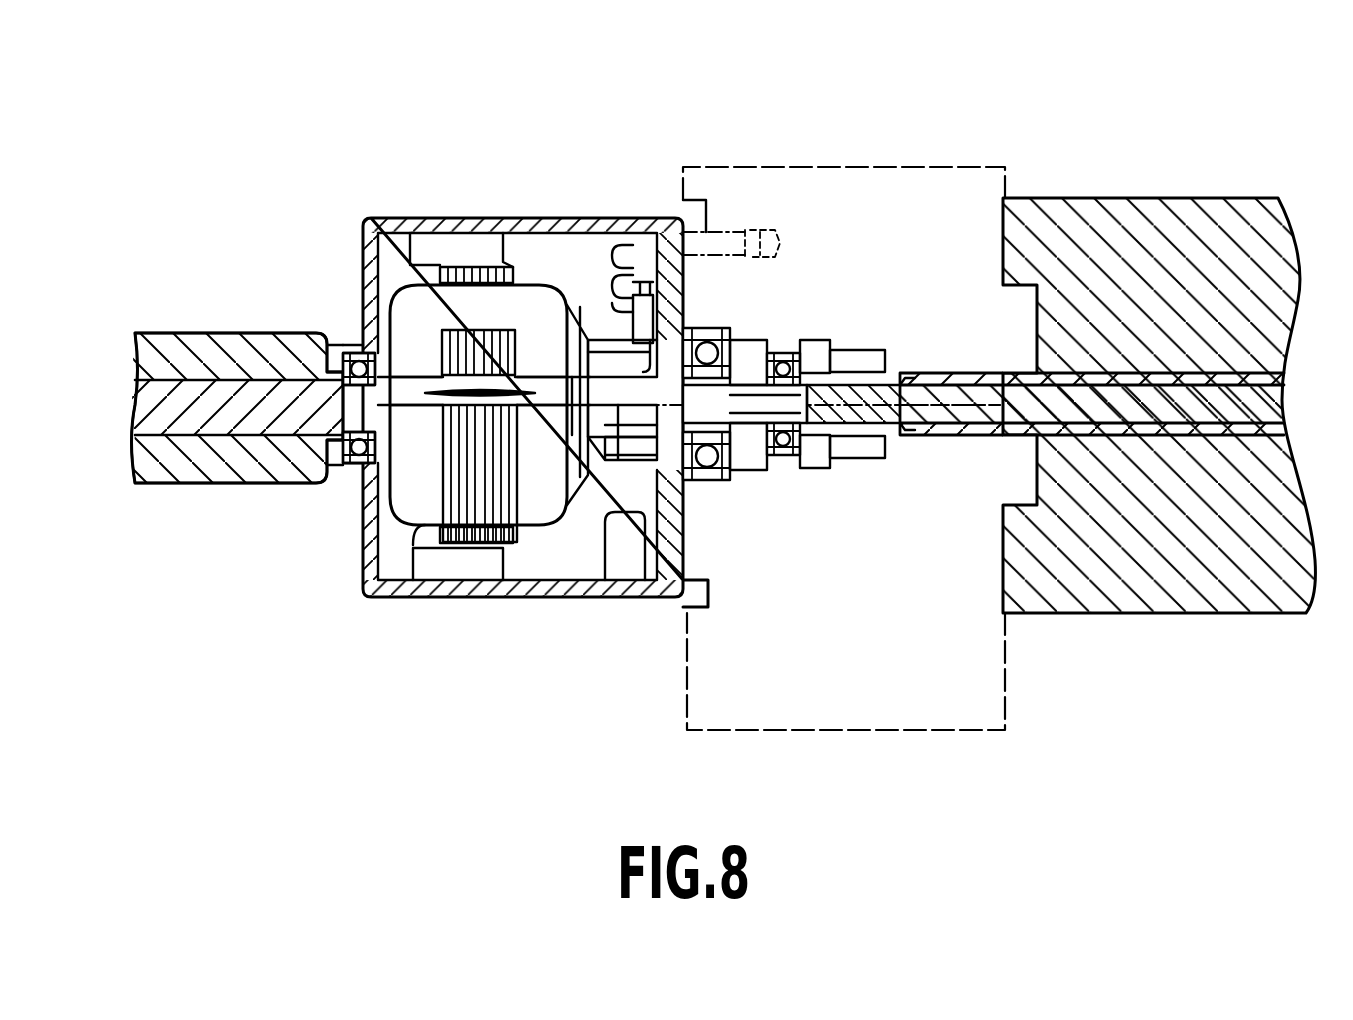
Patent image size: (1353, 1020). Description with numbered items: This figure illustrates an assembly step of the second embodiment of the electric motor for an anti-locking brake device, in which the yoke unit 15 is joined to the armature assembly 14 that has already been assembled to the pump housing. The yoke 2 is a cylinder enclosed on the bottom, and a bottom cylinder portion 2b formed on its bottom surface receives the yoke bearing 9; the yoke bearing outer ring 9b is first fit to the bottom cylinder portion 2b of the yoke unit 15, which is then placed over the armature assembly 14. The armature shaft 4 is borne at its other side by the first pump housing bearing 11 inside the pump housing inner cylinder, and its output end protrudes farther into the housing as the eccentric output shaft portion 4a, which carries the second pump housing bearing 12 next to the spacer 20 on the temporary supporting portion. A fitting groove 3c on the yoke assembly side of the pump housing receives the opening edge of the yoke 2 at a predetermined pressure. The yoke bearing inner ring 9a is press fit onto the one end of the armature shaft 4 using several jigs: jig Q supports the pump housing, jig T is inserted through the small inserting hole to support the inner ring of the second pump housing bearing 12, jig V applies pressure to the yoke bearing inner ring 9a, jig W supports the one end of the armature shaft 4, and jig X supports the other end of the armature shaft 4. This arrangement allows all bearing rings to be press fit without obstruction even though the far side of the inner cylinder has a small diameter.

The yoke 2 is at (425, 222).
The bottom cylinder portion 2b is at (343, 468).
The fitting groove 3c is at (696, 615).
The armature shaft 4 is at (648, 402).
The eccentric output shaft portion 4a is at (785, 412).
The yoke bearing 9 is at (345, 347).
The yoke bearing inner ring 9a is at (345, 368).
The yoke bearing outer ring 9b is at (360, 470).
The first pump housing bearing 11 is at (716, 492).
The second pump housing bearing 12 is at (797, 472).
The armature assembly 14 is at (562, 258).
The yoke unit 15 is at (500, 210).
The spacer 20 is at (745, 455).
The jig Q is at (1090, 237).
The jig T is at (1157, 384).
The jig V is at (207, 355).
The jig W is at (215, 440).
The jig X is at (1190, 400).